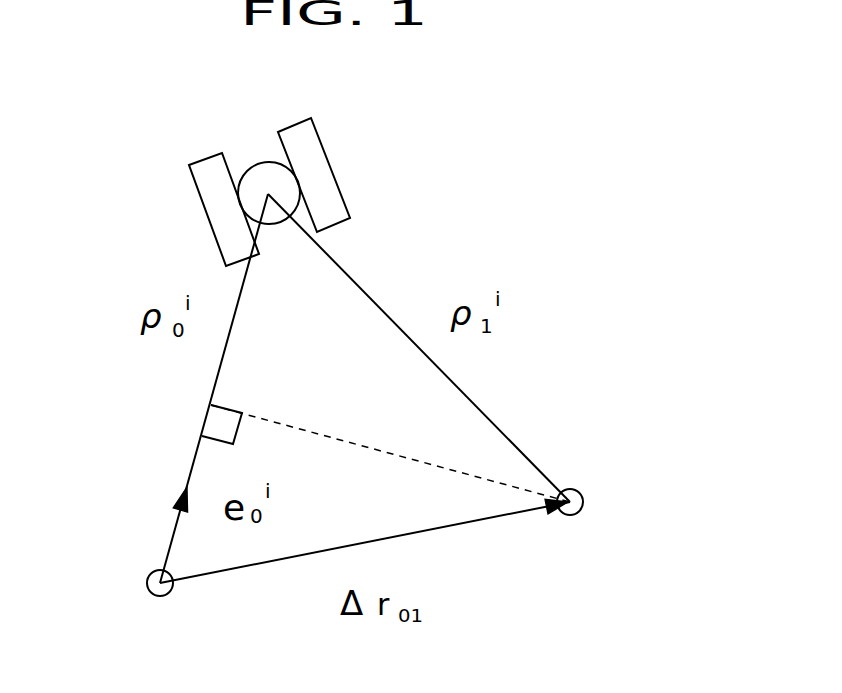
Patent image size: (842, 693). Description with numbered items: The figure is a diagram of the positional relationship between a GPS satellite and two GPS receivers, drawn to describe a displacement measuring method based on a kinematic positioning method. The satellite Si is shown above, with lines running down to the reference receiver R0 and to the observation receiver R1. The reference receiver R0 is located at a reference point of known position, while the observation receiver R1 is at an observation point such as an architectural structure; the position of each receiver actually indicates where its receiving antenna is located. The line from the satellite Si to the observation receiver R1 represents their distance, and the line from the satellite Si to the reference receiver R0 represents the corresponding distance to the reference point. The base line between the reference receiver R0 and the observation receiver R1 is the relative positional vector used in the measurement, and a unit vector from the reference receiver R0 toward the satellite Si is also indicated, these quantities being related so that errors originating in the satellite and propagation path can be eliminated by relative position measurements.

The satellite Si is at (378, 192).
The reference receiver R0 is at (132, 608).
The observation receiver R1 is at (581, 527).